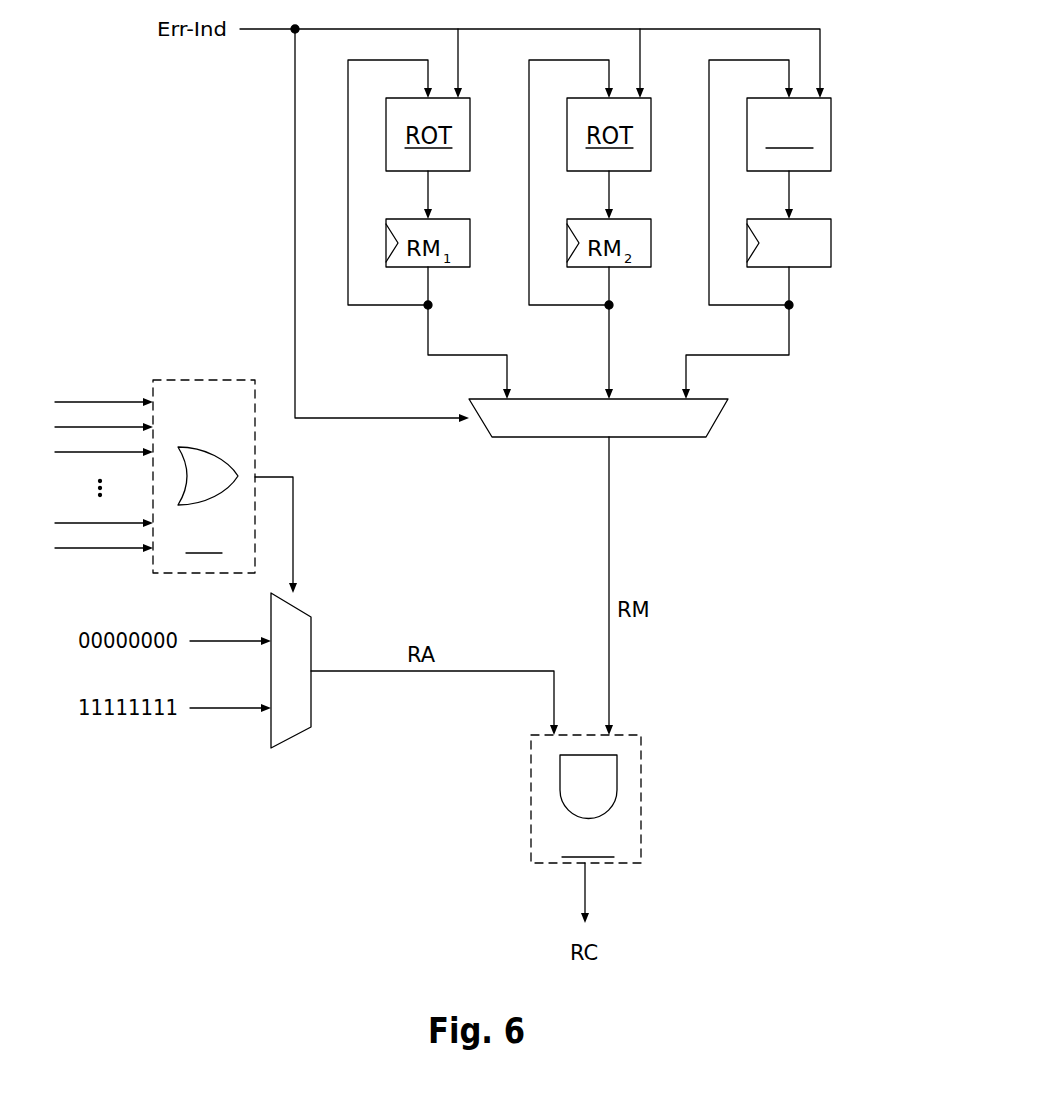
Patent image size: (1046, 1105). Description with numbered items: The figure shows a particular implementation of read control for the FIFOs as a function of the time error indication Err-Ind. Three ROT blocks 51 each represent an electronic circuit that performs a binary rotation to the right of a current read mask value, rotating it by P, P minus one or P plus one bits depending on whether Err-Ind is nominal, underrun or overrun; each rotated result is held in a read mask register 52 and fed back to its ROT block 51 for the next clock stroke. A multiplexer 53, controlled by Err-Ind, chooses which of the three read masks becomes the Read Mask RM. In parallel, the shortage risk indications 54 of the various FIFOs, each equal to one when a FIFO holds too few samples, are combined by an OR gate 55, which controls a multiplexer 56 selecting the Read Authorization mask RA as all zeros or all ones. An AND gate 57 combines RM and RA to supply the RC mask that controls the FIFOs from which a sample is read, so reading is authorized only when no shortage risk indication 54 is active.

The ROT block 51 is at (831, 140).
The register (RM) 52 is at (831, 240).
The multiplexer 53 is at (712, 428).
The shortage risk indication 54 is at (36, 384).
The OR gate 55 is at (193, 375).
The multiplexer 56 is at (293, 736).
The AND gate 57 is at (641, 797).